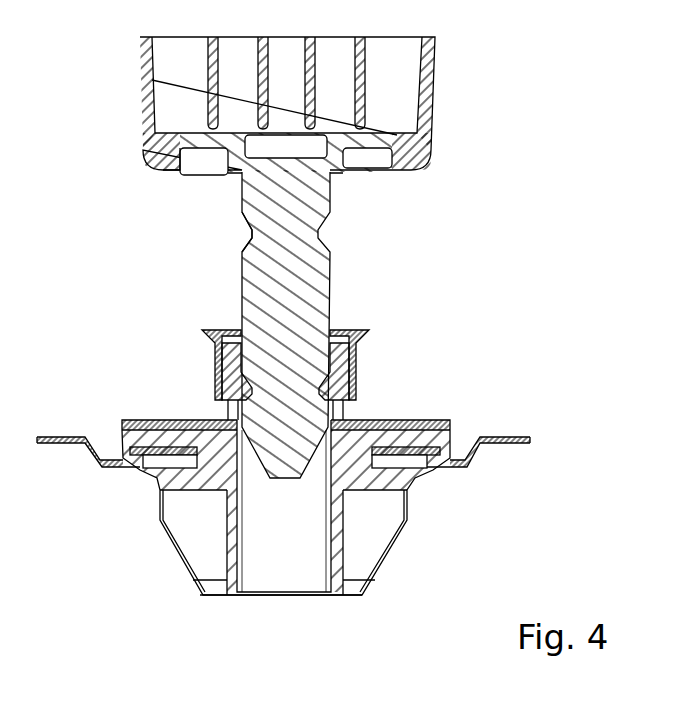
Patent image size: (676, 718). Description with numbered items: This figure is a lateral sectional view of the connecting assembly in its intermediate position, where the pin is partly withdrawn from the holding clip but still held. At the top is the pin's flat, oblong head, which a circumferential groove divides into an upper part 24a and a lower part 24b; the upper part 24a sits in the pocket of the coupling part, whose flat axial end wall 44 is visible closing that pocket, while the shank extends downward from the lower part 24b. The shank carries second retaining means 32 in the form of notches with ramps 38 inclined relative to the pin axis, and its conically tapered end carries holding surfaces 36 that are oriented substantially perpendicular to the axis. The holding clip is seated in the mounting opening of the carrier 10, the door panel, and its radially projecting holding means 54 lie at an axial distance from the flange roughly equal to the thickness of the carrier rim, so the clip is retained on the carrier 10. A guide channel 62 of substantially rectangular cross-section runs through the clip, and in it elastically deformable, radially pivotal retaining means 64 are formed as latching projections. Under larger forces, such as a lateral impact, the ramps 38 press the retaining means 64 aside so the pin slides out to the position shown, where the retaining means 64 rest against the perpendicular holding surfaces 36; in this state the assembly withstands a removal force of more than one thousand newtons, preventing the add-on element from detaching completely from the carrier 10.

The carrier 10 is at (532, 442).
The upper part of the head 24a is at (407, 141).
The lower part of the head 24b is at (387, 167).
The second retaining means 32 is at (238, 236).
The holding surfaces 36 is at (352, 388).
The ramps 38 is at (328, 240).
The axial end wall 44 is at (178, 173).
The holding means 54 is at (380, 541).
The guide channel 62 is at (302, 571).
The retaining means 64 is at (214, 347).